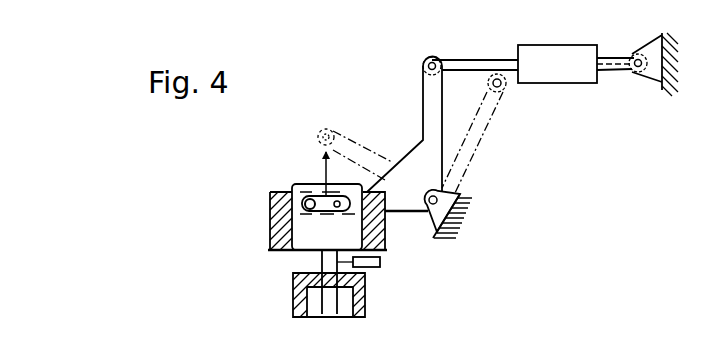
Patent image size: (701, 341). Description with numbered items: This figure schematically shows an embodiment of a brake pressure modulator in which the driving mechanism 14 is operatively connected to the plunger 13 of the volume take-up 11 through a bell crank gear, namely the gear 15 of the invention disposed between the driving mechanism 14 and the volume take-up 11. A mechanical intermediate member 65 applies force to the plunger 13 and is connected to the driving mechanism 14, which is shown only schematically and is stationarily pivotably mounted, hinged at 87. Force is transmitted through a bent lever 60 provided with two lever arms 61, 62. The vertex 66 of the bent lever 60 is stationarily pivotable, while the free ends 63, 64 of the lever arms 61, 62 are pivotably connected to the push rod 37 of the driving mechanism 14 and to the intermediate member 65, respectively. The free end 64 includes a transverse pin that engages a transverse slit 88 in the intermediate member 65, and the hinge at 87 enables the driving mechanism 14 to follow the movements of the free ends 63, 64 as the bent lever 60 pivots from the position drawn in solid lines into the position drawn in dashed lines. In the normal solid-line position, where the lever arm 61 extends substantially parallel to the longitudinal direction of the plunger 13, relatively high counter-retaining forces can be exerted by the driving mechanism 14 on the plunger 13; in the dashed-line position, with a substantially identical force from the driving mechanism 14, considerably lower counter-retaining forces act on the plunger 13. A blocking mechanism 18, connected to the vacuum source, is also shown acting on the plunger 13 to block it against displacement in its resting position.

The volume take-up 11 is at (292, 297).
The plunger 13 is at (330, 318).
The driving mechanism 14 is at (540, 85).
The gear 15 is at (401, 214).
The blocking mechanism 18 is at (380, 262).
The push rod 37 is at (478, 60).
The bent lever 60 is at (448, 187).
The lever arm 61 is at (425, 92).
The lever arm 62 is at (315, 183).
The free end 63 is at (426, 62).
The free end 64 is at (312, 196).
The intermediate member 65 is at (305, 230).
The vertex 66 is at (462, 192).
The pivot mounting 87 is at (634, 73).
The transverse slit 88 is at (339, 200).